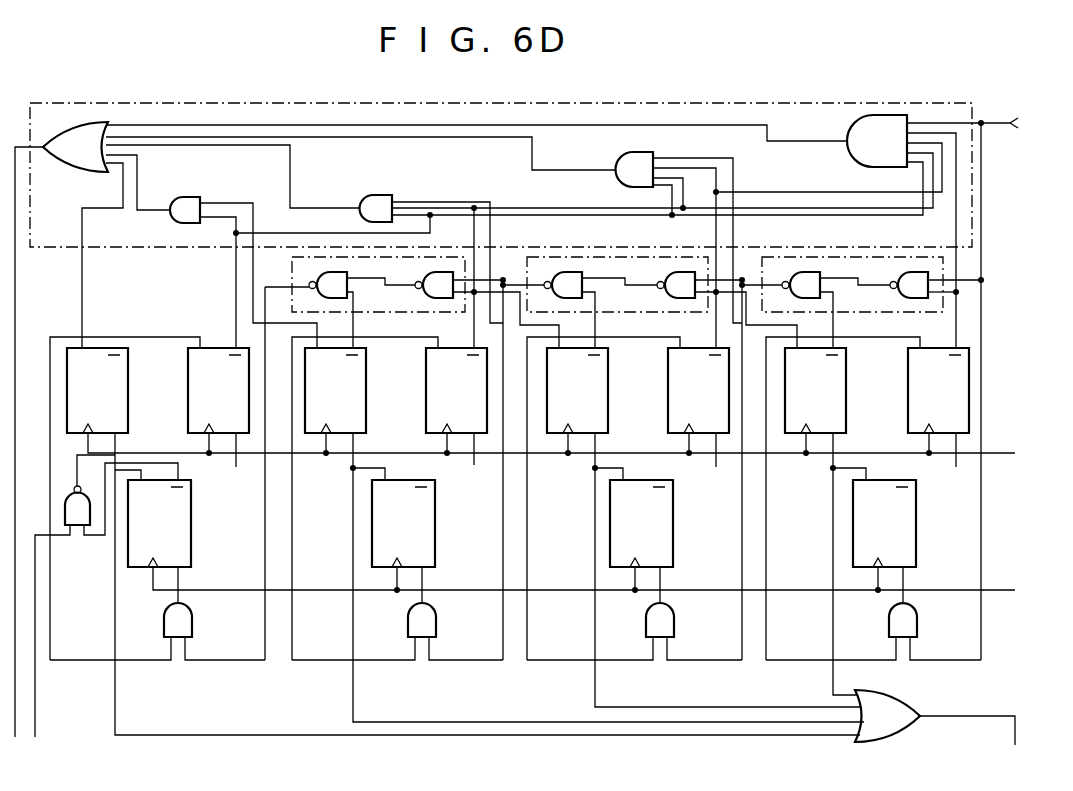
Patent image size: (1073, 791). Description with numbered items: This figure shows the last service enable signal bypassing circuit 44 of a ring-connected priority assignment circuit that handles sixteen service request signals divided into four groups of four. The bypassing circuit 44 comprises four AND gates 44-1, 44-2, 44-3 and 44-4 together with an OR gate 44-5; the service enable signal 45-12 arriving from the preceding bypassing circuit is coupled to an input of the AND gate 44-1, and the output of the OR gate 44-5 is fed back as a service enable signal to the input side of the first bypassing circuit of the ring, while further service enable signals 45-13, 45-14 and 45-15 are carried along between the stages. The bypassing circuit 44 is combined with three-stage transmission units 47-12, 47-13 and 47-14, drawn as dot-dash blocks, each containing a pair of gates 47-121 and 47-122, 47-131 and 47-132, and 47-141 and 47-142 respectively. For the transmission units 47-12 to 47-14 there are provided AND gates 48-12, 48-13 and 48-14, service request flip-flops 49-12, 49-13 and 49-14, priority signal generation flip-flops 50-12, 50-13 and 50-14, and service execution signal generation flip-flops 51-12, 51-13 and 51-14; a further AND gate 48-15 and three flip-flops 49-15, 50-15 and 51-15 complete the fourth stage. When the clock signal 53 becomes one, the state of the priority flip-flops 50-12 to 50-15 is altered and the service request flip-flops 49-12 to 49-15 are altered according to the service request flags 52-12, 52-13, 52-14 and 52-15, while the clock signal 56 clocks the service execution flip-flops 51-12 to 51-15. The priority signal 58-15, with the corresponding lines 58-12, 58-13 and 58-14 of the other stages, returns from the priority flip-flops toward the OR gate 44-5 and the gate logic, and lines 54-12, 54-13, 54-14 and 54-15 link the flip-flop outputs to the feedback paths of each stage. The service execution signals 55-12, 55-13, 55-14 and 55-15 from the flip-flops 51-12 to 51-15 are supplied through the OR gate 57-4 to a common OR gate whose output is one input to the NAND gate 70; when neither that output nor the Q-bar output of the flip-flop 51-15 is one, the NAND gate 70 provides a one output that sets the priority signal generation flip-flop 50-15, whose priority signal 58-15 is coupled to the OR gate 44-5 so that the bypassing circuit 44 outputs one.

The service enable signal bypassing circuit 44 is at (790, 103).
The AND gate 44-1 is at (853, 158).
The AND gate 44-2 is at (619, 165).
The AND gate 44-3 is at (376, 196).
The AND gate 44-4 is at (186, 198).
The OR gate 44-5 is at (76, 168).
The service enable signal 45-12 is at (1004, 378).
The signal line 45-13 is at (743, 283).
The signal line 45-14 is at (503, 283).
The signal line 45-15 is at (262, 292).
The transmission unit 47-12 is at (852, 285).
The transmission unit 47-13 is at (617, 285).
The transmission unit 47-14 is at (378, 285).
The NAND gate 47-121 is at (916, 274).
The NAND gate 47-122 is at (811, 274).
The NAND gate 47-131 is at (683, 274).
The NAND gate 47-132 is at (572, 274).
The NAND gate 47-141 is at (446, 276).
The NAND gate 47-142 is at (326, 276).
The AND gate 48-12 is at (917, 630).
The AND gate 48-13 is at (674, 630).
The AND gate 48-14 is at (436, 630).
The AND gate 48-15 is at (192, 630).
The service request flip-flop 49-12 is at (908, 398).
The service request flip-flop 49-13 is at (668, 398).
The service request flip-flop 49-14 is at (426, 398).
The service request flip-flop 49-15 is at (188, 398).
The priority signal generation flip-flop 50-12 is at (846, 378).
The priority signal generation flip-flop 50-13 is at (608, 378).
The priority signal generation flip-flop 50-14 is at (366, 378).
The priority signal generation flip-flop 50-15 is at (128, 378).
The service execution signal generation flip-flop 51-12 is at (917, 553).
The service execution signal generation flip-flop 51-13 is at (674, 551).
The service execution signal generation flip-flop 51-14 is at (436, 551).
The service execution signal generation flip-flop 51-15 is at (192, 551).
The service request flag 52-12 is at (954, 465).
The service request flag 52-13 is at (714, 464).
The service request flag 52-14 is at (474, 462).
The service request flag 52-15 is at (231, 462).
The clock signal 53 is at (567, 450).
The feedback line 54-12 is at (848, 487).
The feedback line 54-13 is at (603, 487).
The feedback line 54-14 is at (372, 487).
The feedback line 54-15 is at (132, 486).
The service execution signal 55-12 is at (873, 599).
The service execution signal 55-13 is at (634, 599).
The service execution signal 55-14 is at (397, 599).
The service execution signal 55-15 is at (157, 618).
The clock signal 56 is at (599, 586).
The OR gate 57-4 is at (905, 711).
The signal line 58-12 is at (752, 335).
The signal line 58-13 is at (515, 335).
The signal line 58-14 is at (278, 350).
The priority signal 58-15 is at (112, 255).
The NAND gate 70 is at (58, 478).